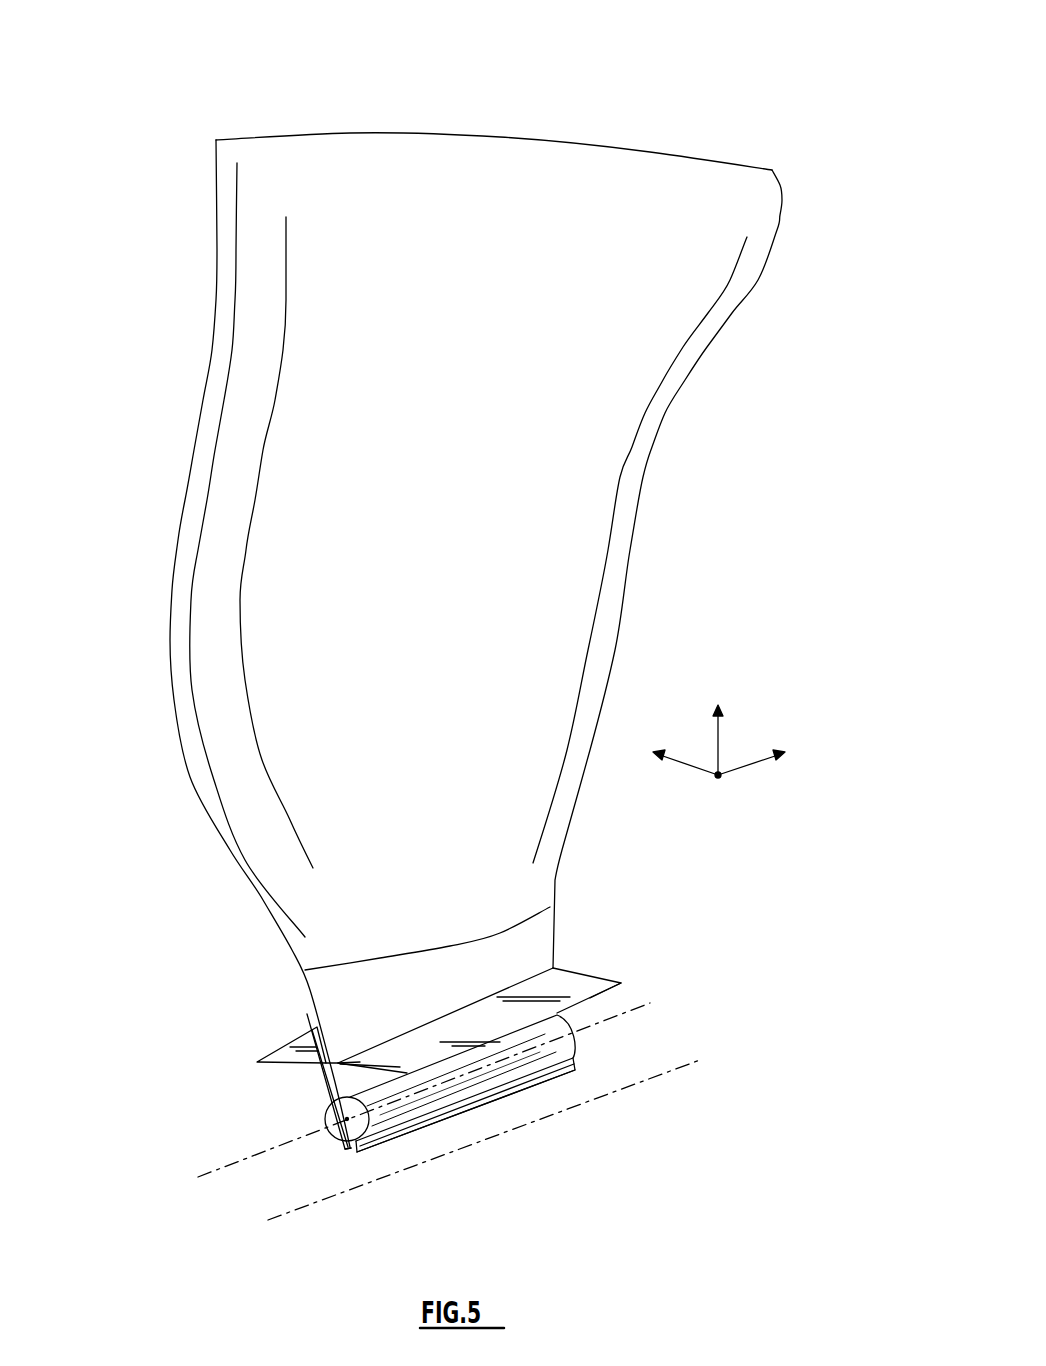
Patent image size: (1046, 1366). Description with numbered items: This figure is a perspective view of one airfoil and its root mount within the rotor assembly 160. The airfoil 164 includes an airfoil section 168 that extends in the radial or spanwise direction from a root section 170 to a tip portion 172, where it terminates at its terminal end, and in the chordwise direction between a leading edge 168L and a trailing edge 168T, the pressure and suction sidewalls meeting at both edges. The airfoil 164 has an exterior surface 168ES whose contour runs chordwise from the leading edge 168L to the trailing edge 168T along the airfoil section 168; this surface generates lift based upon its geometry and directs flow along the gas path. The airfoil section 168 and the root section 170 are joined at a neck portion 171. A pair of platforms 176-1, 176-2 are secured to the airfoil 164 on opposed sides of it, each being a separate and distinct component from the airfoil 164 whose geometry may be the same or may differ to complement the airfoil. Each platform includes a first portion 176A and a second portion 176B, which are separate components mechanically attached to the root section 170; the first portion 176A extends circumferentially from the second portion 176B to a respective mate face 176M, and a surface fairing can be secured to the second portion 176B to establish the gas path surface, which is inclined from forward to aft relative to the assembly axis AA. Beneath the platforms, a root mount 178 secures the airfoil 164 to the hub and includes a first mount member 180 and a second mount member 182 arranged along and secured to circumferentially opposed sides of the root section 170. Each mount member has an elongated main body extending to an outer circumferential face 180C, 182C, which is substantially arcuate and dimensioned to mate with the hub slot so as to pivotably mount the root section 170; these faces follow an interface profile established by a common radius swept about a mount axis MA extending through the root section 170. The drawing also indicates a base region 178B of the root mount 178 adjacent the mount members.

The rotor assembly 160 is at (116, 62).
The airfoil 164 is at (254, 122).
The tip portion 172 is at (412, 152).
The airfoil section 168 is at (602, 622).
The leading edge 168L is at (178, 532).
The trailing edge 168T is at (630, 558).
The exterior surface 168ES is at (697, 300).
The first platform 176-1 is at (295, 1038).
The second platform 176-2 is at (593, 985).
The first portion of platform 176A is at (563, 977).
The mate face 176M is at (588, 997).
The second portion of platform 176B is at (325, 1080).
The neck portion 171 is at (335, 1098).
The root mount 178 is at (582, 1025).
The pin base 178B is at (462, 1110).
The first mount member 180 is at (327, 1125).
The outer circumferential face of first mount member 180C is at (340, 1118).
The second mount member 182 is at (370, 1150).
The outer circumferential face of second mount member 182C is at (408, 1103).
The root section 170 is at (340, 1145).
The mount axis MA is at (213, 1170).
The assembly axis AA is at (638, 1087).